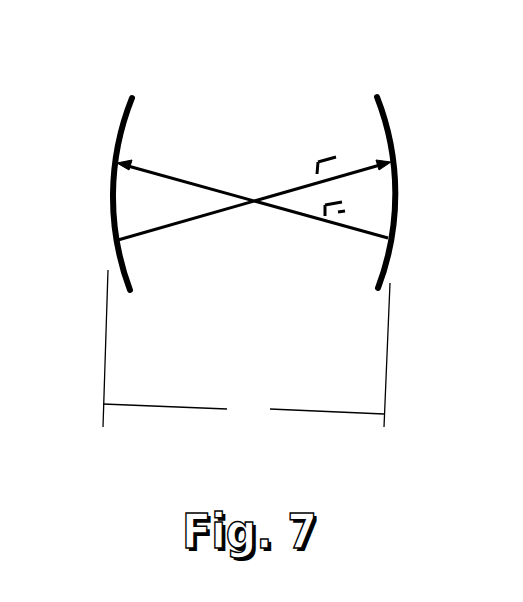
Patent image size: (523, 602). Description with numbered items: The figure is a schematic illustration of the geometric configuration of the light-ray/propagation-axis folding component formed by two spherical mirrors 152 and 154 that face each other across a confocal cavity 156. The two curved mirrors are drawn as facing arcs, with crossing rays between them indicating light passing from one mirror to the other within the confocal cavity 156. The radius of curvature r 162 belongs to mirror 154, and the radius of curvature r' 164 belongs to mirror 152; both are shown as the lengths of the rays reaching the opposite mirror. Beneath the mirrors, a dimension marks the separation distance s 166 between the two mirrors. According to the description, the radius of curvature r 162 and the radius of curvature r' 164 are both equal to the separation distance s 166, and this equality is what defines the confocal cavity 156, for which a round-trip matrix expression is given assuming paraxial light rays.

The spherical mirror 152 is at (122, 113).
The spherical mirror 154 is at (398, 223).
The confocal cavity 156 is at (250, 142).
The radius of curvature r 162 is at (325, 150).
The radius of curvature r' 164 is at (350, 204).
The separation distance s 166 is at (244, 425).